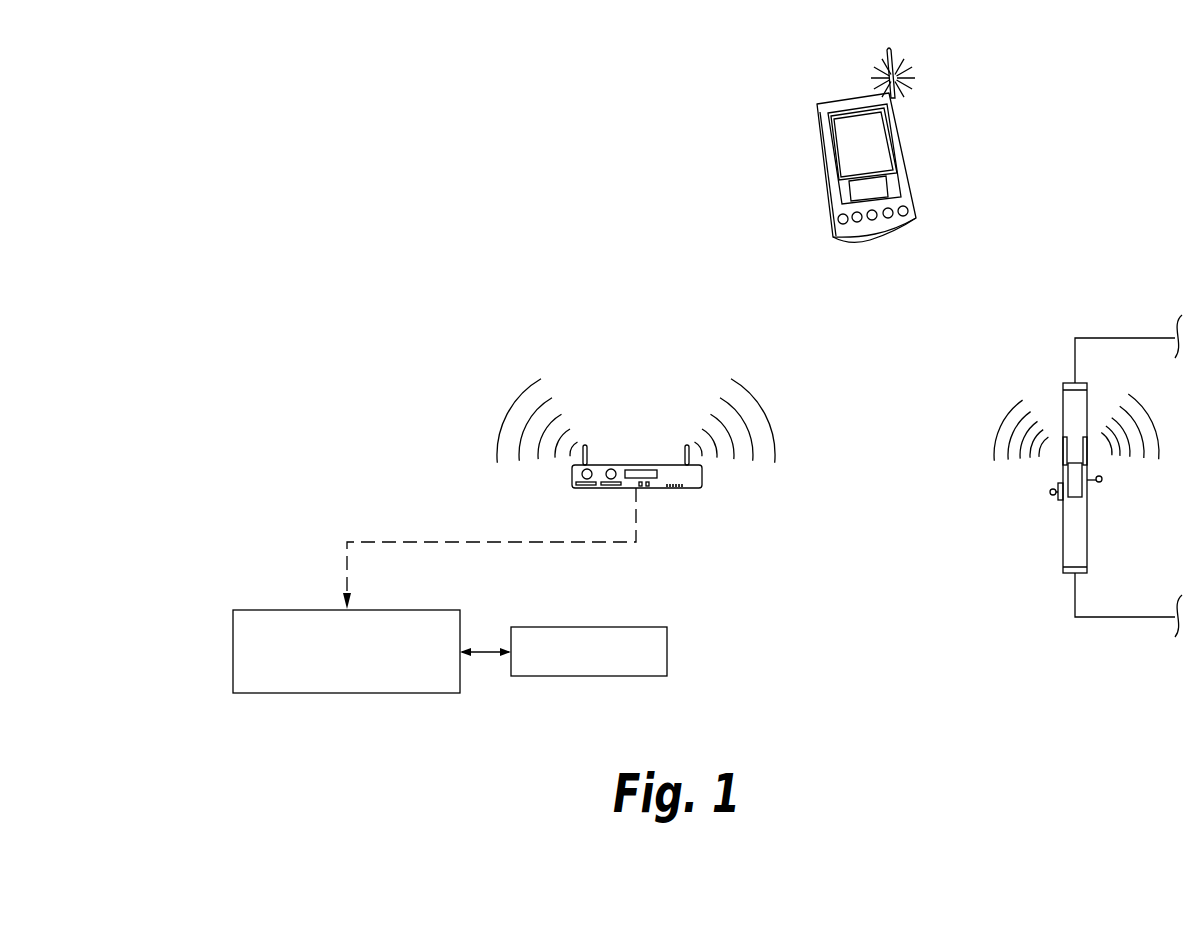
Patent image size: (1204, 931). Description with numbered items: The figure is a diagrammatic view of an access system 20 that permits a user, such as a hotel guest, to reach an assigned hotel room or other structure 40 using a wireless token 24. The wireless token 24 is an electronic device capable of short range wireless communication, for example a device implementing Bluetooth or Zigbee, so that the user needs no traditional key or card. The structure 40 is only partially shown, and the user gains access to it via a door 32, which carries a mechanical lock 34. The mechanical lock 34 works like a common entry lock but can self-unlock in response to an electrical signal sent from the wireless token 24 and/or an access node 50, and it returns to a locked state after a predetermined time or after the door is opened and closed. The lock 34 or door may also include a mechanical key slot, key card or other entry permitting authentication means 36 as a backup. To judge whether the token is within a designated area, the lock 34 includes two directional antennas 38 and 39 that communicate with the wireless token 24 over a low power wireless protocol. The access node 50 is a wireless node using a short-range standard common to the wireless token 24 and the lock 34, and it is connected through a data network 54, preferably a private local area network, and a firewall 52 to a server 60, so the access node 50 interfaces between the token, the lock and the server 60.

The access system 20 is at (467, 232).
The wireless token 24 is at (902, 127).
The door 32 is at (1063, 410).
The mechanical lock 34 is at (1083, 495).
The authentication means 36 is at (1058, 502).
The directional antenna 38 is at (1064, 453).
The directional antenna 39 is at (1088, 445).
The structure 40 is at (1191, 465).
The access node 50 is at (702, 477).
The firewall 52 is at (265, 693).
The data network 54 is at (430, 540).
The server 60 is at (542, 677).